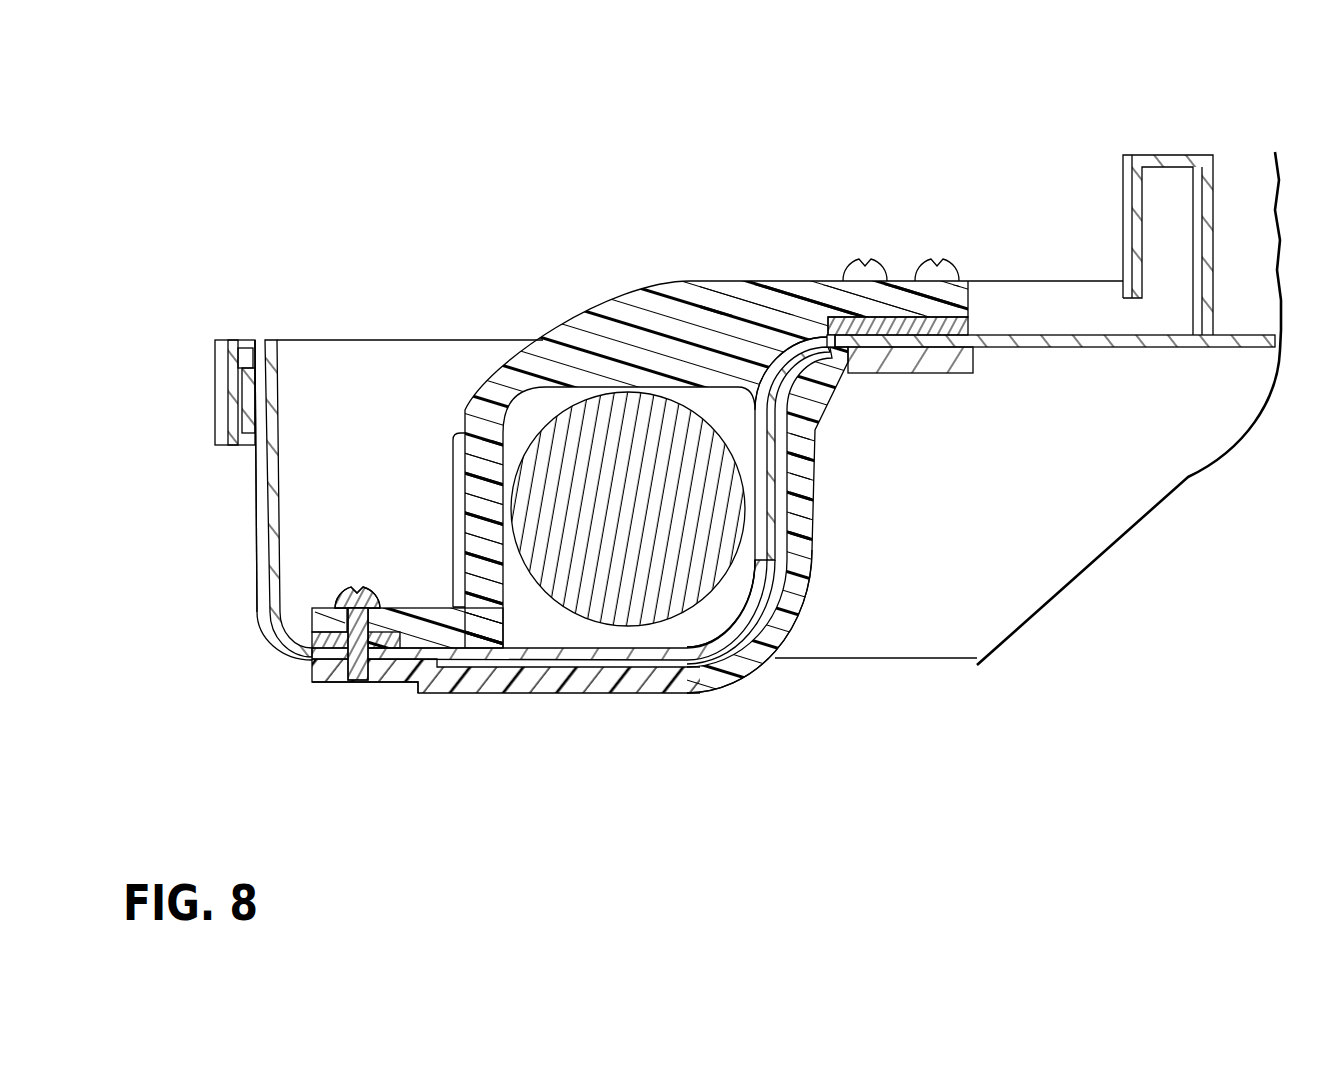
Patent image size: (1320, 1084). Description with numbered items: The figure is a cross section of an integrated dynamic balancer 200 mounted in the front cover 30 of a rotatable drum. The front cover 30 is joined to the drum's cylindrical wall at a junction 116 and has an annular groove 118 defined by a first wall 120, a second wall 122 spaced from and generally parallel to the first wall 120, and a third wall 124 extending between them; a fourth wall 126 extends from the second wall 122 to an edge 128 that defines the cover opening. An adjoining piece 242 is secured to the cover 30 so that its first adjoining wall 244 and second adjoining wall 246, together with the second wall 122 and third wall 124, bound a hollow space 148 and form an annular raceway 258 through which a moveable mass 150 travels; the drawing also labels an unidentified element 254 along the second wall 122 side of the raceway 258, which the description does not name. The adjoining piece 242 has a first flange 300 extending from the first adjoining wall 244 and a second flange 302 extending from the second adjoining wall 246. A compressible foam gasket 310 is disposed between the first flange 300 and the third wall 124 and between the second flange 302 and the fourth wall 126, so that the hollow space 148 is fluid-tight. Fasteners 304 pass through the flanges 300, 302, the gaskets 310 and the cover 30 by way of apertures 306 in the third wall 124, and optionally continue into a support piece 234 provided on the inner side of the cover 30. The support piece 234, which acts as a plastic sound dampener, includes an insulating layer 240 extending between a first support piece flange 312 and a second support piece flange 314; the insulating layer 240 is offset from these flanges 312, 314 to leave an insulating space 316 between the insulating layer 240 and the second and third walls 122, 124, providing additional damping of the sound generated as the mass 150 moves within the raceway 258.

The front cover 30 is at (1060, 373).
The junction 116 is at (205, 382).
The annular groove 118 is at (348, 395).
The first wall 120 is at (270, 473).
The second wall 122 is at (767, 523).
The third wall 124 is at (550, 665).
The fourth wall 126 is at (1087, 350).
The edge 128 is at (1213, 205).
The hollow space 148 is at (692, 630).
The moveable mass 150 is at (628, 509).
The integrated dynamic balancer 200 is at (310, 315).
The support piece 234 is at (777, 672).
The insulating layer 240 is at (797, 583).
The adjoining piece 242 is at (510, 355).
The first adjoining wall 244 is at (487, 455).
The second adjoining wall 246 is at (625, 338).
The liner 254 is at (765, 448).
The annular raceway 258 is at (523, 413).
The first flange 300 is at (420, 605).
The second flange 302 is at (968, 320).
The fastener 304 is at (347, 596).
The aperture 306 is at (360, 680).
The gasket 310 is at (313, 642).
The first support piece flange 312 is at (318, 683).
The second support piece flange 314 is at (955, 375).
The insulating space 316 is at (727, 652).